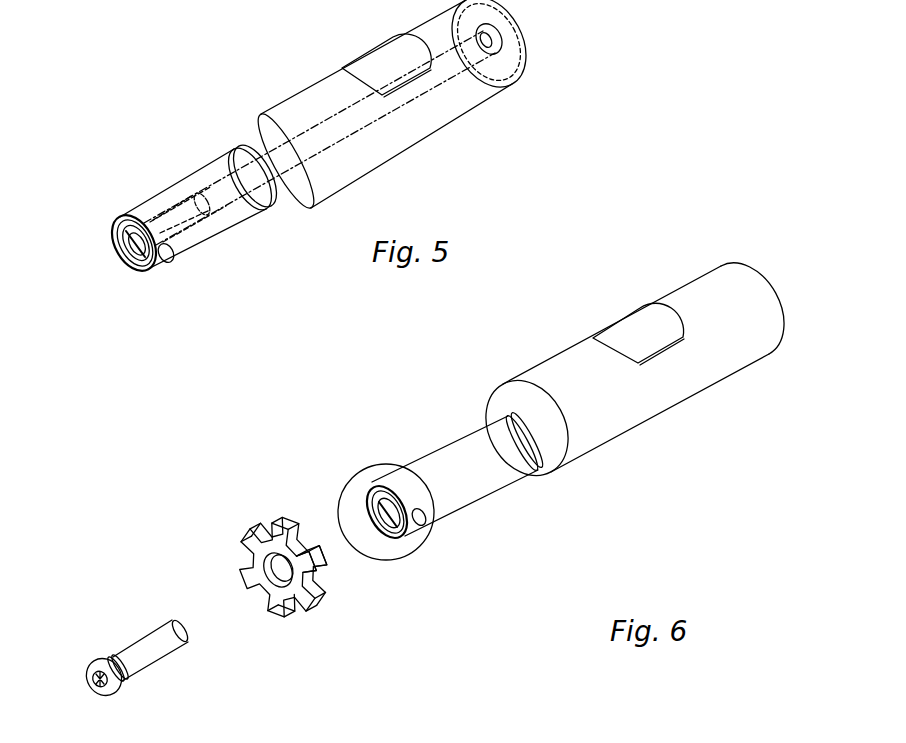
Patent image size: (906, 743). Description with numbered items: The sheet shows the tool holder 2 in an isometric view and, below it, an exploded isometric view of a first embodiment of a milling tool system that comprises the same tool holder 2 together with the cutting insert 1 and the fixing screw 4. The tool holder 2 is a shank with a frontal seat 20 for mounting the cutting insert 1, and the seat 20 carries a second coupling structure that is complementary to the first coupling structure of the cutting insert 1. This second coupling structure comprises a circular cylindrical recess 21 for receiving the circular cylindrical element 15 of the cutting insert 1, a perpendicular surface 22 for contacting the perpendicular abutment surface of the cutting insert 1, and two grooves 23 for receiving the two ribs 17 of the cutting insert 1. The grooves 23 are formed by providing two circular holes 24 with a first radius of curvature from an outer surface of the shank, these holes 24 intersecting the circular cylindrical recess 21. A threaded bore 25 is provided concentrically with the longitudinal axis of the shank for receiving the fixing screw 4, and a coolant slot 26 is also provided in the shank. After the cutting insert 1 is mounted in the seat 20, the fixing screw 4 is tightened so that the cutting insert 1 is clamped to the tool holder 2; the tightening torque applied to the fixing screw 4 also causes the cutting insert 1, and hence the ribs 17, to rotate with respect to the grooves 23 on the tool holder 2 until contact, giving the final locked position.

In FIG. 6, the cutting insert 1 is at (220, 508).
In FIG. 5, the tool holder 2 is at (172, 108).
In FIG. 6, the tool holder 2 is at (430, 400).
In FIG. 6, the fixing screw 4 is at (92, 608).
In FIG. 6, the circular cylindrical element 15 is at (318, 545).
In FIG. 6, the ribs 17 is at (333, 562).
In FIG. 5, the seat 20 is at (100, 274).
In FIG. 6, the seat 20 is at (421, 549).
In FIG. 5, the circular cylindrical recess 21 is at (134, 264).
In FIG. 6, the circular cylindrical recess 21 is at (386, 540).
In FIG. 5, the perpendicular surface 22 is at (147, 272).
In FIG. 6, the perpendicular surface 22 is at (398, 535).
In FIG. 5, the grooves 23 is at (120, 238).
In FIG. 6, the grooves 23 is at (372, 508).
In FIG. 5, the circular holes 24 is at (186, 270).
In FIG. 6, the circular holes 24 is at (450, 528).
In FIG. 5, the threaded bore 25 is at (160, 203).
In FIG. 5, the coolant slot 26 is at (204, 233).